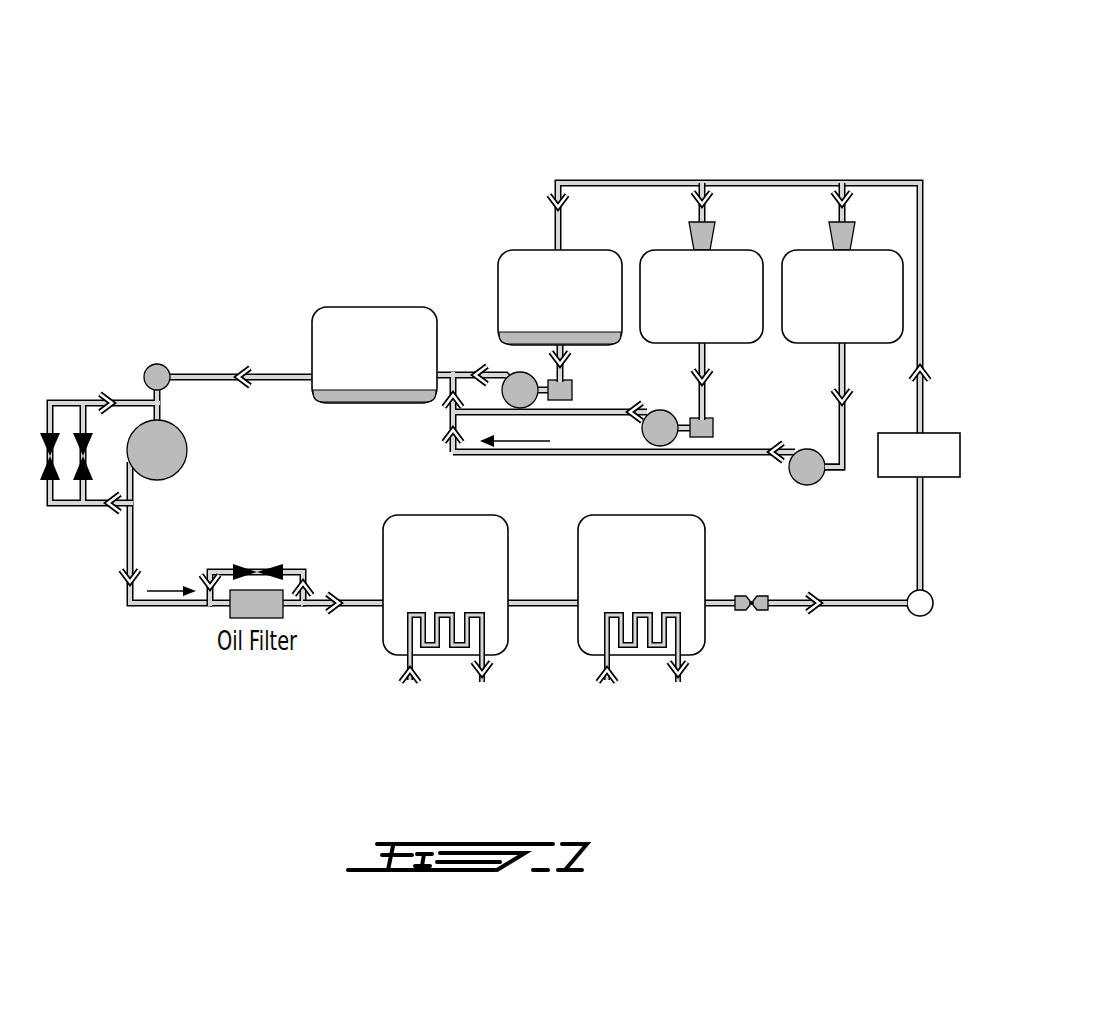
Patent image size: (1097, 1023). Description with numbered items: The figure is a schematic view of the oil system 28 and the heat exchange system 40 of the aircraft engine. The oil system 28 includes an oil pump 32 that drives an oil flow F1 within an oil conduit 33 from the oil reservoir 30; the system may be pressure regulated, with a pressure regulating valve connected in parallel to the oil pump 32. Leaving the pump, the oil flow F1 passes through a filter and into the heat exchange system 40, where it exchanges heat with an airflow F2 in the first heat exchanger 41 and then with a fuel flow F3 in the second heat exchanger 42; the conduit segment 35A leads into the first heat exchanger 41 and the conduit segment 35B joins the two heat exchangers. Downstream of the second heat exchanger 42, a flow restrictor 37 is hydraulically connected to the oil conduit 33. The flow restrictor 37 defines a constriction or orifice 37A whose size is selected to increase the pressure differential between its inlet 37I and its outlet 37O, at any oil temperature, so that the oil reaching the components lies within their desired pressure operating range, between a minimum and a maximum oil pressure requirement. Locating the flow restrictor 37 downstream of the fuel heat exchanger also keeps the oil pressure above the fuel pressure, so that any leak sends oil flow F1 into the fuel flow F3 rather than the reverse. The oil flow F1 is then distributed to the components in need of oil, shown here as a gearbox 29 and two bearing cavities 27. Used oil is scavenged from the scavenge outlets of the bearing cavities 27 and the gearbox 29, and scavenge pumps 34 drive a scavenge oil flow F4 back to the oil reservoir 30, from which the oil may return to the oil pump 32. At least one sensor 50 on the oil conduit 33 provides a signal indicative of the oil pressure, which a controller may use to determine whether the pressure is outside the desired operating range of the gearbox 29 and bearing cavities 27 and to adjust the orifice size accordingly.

The bearing cavity 27 is at (732, 250).
The oil system 28 is at (746, 133).
The gearbox 29 is at (527, 250).
The oil reservoir 30 is at (375, 307).
The oil pump 32 is at (158, 466).
The oil conduit 33 is at (165, 606).
The scavenge pump 34 is at (512, 380).
The conduit segment upstream of air/oil heat exchanger 35A is at (318, 607).
The conduit segment between heat exchangers 35B is at (548, 600).
The flow restrictor 37 is at (748, 598).
The inlet 37I is at (727, 600).
The outlet 37O is at (770, 598).
The orifice 37A is at (749, 612).
The heat exchange system 40 is at (732, 663).
The first heat exchanger 41 is at (383, 650).
The second heat exchanger 42 is at (643, 514).
The sensor 50 is at (889, 480).
The oil flow F1 is at (164, 588).
The airflow F2 is at (401, 655).
The fuel flow F3 is at (585, 653).
The scavenge oil flow F4 is at (528, 441).